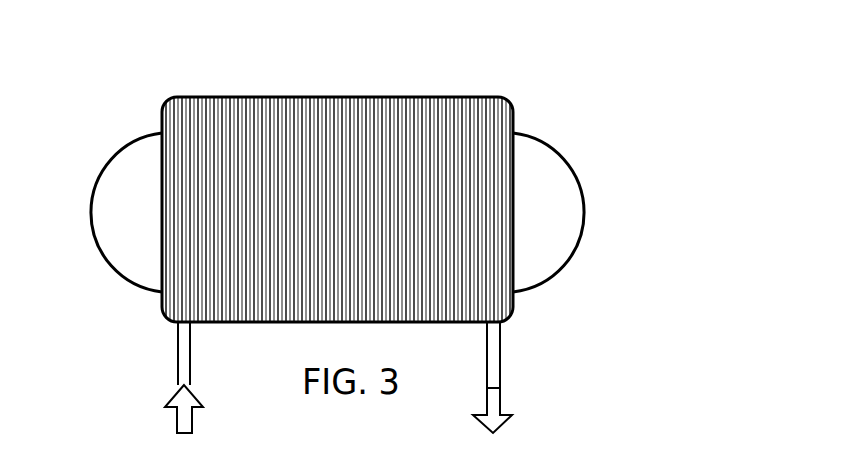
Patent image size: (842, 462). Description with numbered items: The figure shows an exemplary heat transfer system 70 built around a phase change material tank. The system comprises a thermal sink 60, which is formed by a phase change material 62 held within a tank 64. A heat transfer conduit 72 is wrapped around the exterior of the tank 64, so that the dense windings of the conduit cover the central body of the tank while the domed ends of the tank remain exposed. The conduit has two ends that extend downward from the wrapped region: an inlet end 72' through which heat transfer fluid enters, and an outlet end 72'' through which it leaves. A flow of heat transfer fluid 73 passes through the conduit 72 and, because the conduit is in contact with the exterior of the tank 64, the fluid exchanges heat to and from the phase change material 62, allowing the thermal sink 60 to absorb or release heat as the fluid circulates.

The heat transfer system 70 is at (103, 111).
The tank 64 is at (142, 153).
The thermal sink 60 is at (542, 172).
The phase change material 62 is at (558, 242).
The heat transfer conduit 72 is at (371, 174).
The heat transfer conduit inlet end 72' is at (134, 377).
The heat transfer conduit outlet end 72'' is at (554, 359).
The flow of heat transfer fluid 73 is at (500, 402).